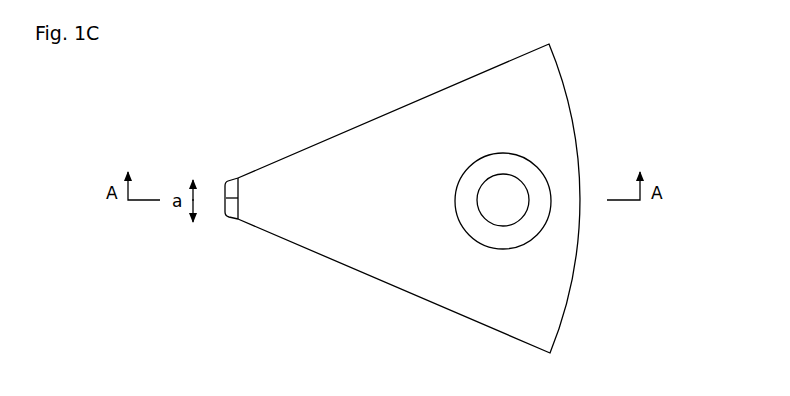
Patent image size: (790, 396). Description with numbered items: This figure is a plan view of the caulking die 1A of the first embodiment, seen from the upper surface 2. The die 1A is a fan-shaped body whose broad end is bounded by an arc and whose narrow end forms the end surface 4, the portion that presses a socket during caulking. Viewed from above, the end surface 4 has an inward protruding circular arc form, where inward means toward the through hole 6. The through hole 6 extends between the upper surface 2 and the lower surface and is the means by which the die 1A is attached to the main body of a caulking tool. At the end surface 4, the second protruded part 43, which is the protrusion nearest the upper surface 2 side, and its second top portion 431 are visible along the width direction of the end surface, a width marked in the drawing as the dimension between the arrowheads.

The die 1A is at (658, 32).
The upper surface 2 is at (450, 105).
The end surface 4 is at (228, 198).
The second top portion 431 is at (230, 210).
The second protruded part 43 is at (196, 222).
The through hole 6 is at (513, 190).